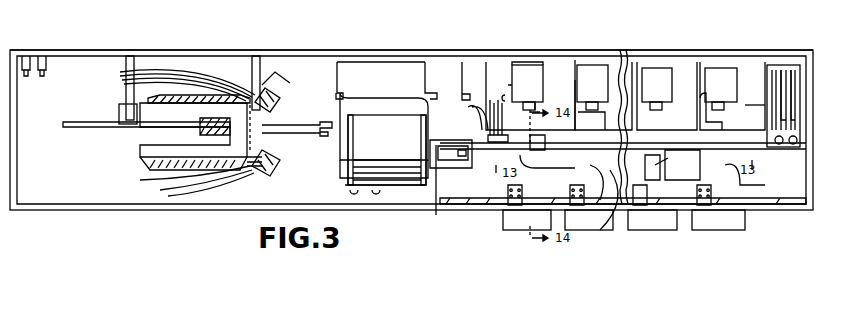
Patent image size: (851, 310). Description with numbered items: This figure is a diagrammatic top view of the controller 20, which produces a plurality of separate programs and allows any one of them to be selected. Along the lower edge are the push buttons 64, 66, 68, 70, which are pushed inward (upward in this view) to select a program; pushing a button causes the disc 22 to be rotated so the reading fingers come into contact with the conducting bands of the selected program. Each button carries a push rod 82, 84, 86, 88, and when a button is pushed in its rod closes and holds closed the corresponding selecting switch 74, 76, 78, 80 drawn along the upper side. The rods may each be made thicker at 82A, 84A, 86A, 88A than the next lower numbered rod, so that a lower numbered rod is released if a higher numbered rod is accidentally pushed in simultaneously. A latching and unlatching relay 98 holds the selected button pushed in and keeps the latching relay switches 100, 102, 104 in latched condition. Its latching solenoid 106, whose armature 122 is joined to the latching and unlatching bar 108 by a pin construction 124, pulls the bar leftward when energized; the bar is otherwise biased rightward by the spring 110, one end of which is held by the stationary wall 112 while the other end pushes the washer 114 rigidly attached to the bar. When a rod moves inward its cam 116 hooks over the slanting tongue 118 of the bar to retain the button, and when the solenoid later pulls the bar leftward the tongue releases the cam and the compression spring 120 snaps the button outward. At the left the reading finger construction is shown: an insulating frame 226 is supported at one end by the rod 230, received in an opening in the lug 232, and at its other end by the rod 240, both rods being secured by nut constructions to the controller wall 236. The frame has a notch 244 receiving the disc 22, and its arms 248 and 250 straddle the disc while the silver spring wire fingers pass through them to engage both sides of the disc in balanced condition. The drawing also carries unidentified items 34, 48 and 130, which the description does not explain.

The controller 20 is at (140, 228).
The disc 22 is at (176, 126).
The drive unit 34 is at (405, 100).
The connector 48 is at (330, 142).
The push button 64 is at (505, 226).
The push button 66 is at (590, 230).
The push button 68 is at (660, 222).
The push button 70 is at (740, 225).
The selecting switch 74 is at (525, 65).
The selecting switch 76 is at (592, 65).
The selecting switch 78 is at (662, 68).
The selecting switch 80 is at (727, 68).
The push rod 82 is at (538, 146).
The thickened rod portion 82A is at (538, 176).
The push rod 84 is at (585, 122).
The thickened rod portion 84A is at (618, 240).
The push rod 86 is at (655, 142).
The thickened rod portion 86A is at (660, 166).
The push rod 88 is at (730, 122).
The thickened rod portion 88A is at (740, 186).
The latching and unlatching relay 98 is at (332, 166).
The latching relay switch 100 is at (800, 142).
The latching relay switch 102 is at (816, 132).
The latching relay switch 104 is at (821, 139).
The latching solenoid 106 is at (360, 120).
The latching and unlatching bar 108 is at (700, 100).
The spring 110 is at (482, 118).
The stationary wall 112 is at (472, 162).
The washer 114 is at (490, 100).
The cam 116 is at (540, 155).
The slanting tongue 118 is at (512, 115).
The compression spring 120 is at (508, 196).
The armature 122 is at (434, 216).
The pin construction 124 is at (428, 137).
The tab 130 is at (538, 105).
The insulating frame 226 is at (137, 152).
The rod 230 is at (126, 88).
The lug 232 is at (119, 114).
The controller wall 236 is at (105, 50).
The rod 240 is at (262, 73).
The notch 244 is at (156, 122).
The arm 248 is at (240, 175).
The arm 250 is at (290, 86).